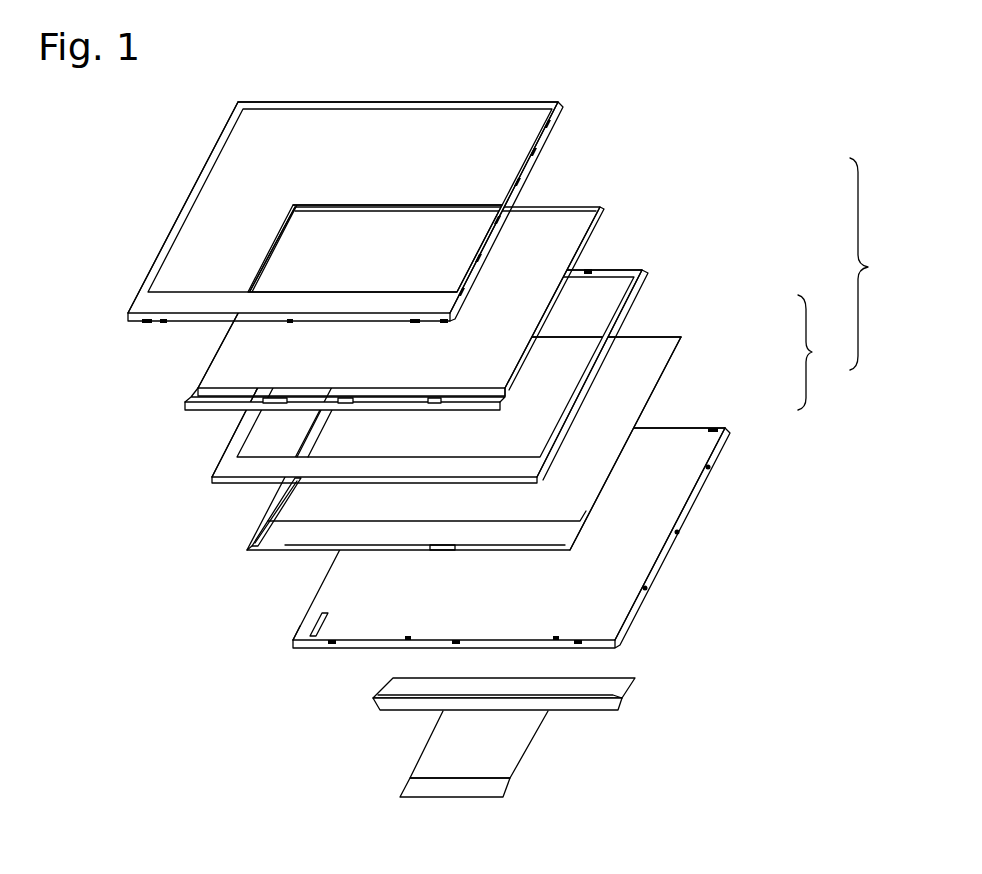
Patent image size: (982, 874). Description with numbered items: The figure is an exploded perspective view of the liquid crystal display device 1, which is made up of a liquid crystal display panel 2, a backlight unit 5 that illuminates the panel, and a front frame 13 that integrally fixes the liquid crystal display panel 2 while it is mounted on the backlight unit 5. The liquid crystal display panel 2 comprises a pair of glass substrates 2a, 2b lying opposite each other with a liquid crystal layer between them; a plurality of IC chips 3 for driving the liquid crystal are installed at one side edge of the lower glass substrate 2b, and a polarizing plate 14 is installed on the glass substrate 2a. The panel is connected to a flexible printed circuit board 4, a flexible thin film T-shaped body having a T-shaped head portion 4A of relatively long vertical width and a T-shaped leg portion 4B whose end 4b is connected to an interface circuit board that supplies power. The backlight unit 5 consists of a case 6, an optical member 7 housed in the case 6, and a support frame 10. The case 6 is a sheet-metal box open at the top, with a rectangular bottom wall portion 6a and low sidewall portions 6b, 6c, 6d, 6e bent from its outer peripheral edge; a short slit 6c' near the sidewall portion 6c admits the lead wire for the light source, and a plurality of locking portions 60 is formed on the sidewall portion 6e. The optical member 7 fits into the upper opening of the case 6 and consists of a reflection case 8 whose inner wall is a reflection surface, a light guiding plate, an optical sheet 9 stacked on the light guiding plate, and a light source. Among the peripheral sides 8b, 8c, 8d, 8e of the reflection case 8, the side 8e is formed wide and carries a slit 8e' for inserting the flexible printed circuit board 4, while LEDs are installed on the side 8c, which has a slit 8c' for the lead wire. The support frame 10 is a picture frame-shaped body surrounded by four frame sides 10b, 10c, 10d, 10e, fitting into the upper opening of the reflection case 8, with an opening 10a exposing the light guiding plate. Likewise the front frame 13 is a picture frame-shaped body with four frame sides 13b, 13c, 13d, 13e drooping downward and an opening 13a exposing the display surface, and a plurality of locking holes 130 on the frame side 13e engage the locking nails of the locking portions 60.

The liquid crystal display device 1 is at (888, 277).
The liquid crystal display panel 2 is at (475, 305).
The glass substrate 2a is at (205, 362).
The glass substrate 2b is at (190, 397).
The IC chips 3 is at (246, 418).
The flexible printed circuit board 4 is at (531, 758).
The T-shaped head portion 4A is at (620, 685).
The T-shaped leg portion 4B is at (458, 745).
The end 4b is at (444, 798).
The backlight unit 5 is at (833, 362).
The case 6 is at (505, 541).
The bottom wall portion 6a is at (618, 610).
The sidewall portion 6b is at (643, 590).
The sidewall portion 6c is at (285, 619).
The slit 6c' is at (264, 645).
The sidewall portion 6d is at (678, 425).
The sidewall portion 6e is at (355, 648).
The locking portions 60 is at (578, 645).
The optical member 7 is at (488, 463).
The reflection case 8 is at (453, 463).
The side 8b is at (608, 478).
The side 8c is at (248, 512).
The slit 8c' is at (232, 573).
The side 8d is at (652, 338).
The side 8e is at (427, 554).
The slit 8e' is at (440, 567).
The optical sheet 9 is at (302, 502).
The support frame 10 is at (465, 373).
The opening 10a is at (528, 435).
The frame side 10b is at (625, 313).
The frame side 10c is at (225, 458).
The frame side 10d is at (612, 270).
The frame side 10e is at (408, 478).
The front frame 13 is at (450, 207).
The opening 13a is at (265, 157).
The frame side 13b is at (520, 178).
The frame side 13c is at (193, 188).
The frame side 13d is at (380, 102).
The frame side 13e is at (150, 323).
The locking holes 130 is at (165, 324).
The polarizing plate 14 is at (557, 217).